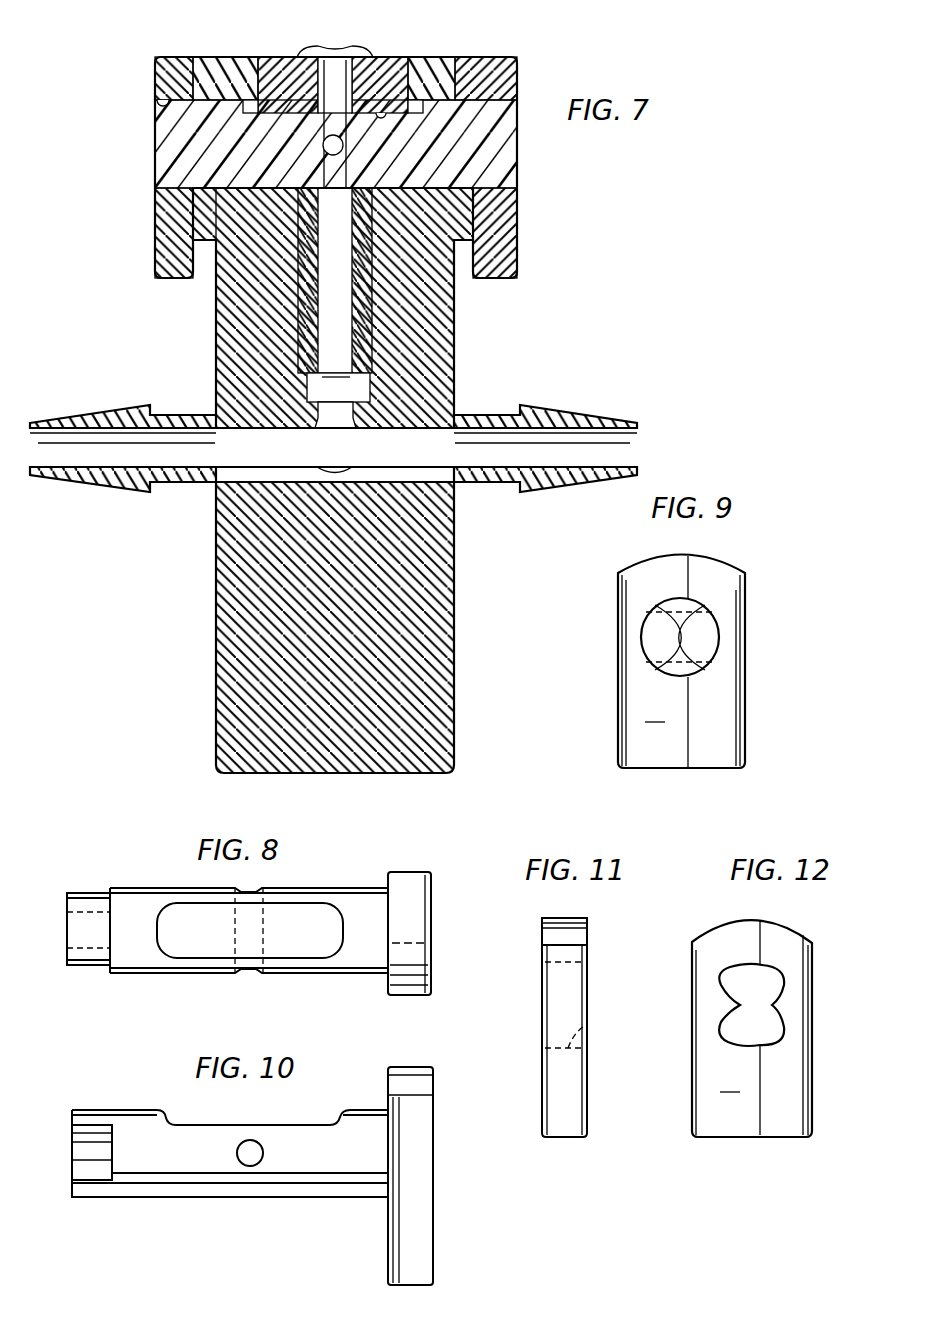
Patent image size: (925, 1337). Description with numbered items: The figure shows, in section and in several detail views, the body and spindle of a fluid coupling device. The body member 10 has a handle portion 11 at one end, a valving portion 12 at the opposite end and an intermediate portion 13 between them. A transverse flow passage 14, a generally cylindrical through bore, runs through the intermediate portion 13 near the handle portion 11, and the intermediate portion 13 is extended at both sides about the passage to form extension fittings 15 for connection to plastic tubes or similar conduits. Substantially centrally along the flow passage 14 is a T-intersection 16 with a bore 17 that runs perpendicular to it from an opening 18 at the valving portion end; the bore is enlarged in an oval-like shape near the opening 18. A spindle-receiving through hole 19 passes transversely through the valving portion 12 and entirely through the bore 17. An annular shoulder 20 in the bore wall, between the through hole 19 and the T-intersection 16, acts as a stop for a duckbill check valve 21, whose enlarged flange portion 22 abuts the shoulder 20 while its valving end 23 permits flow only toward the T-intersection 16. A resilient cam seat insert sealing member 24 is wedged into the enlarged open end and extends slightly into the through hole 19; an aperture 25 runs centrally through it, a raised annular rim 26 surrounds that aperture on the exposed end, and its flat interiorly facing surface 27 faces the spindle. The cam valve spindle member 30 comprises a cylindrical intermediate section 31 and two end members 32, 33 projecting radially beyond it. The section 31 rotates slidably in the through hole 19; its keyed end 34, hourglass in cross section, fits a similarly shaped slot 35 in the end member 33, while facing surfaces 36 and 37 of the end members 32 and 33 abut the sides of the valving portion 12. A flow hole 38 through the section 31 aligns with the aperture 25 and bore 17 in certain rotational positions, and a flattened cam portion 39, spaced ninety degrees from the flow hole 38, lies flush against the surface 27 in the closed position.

In FIG. 7, the body member 10 is at (600, 361).
In FIG. 7, the handle portion 11 is at (430, 665).
In FIG. 7, the valving portion 12 is at (470, 220).
In FIG. 7, the intermediate portion 13 is at (240, 370).
In FIG. 7, the transverse flow passage 14 is at (108, 422).
In FIG. 7, the extension fittings 15 is at (628, 422).
In FIG. 7, the T-intersection 16 is at (330, 477).
In FIG. 7, the bore 17 is at (372, 388).
In FIG. 7, the opening 18 is at (392, 72).
In FIG. 7, the spindle-receiving through hole 19 is at (450, 95).
In FIG. 7, the annular shoulder 20 is at (370, 205).
In FIG. 7, the duckbill check valve 21 is at (352, 352).
In FIG. 7, the flange portion 22 is at (300, 205).
In FIG. 7, the valving end 23 is at (318, 380).
In FIG. 7, the cam seat insert sealing member 24 is at (245, 62).
In FIG. 7, the aperture 25 is at (340, 62).
In FIG. 7, the raised annular rim 26 is at (305, 56).
In FIG. 7, the interiorly facing surface 27 is at (381, 110).
In FIG. 7, the cam valve spindle member 30 is at (582, 185).
In FIG. 9, the cam valve spindle member 30 is at (760, 566).
In FIG. 8, the cam valve spindle member 30 is at (100, 858).
In FIG. 10, the cam valve spindle member 30 is at (102, 1090).
In FIG. 11, the cam valve spindle member 30 is at (578, 1157).
In FIG. 12, the cam valve spindle member 30 is at (813, 1157).
In FIG. 7, the intermediate section 31 is at (200, 137).
In FIG. 8, the intermediate section 31 is at (142, 900).
In FIG. 10, the intermediate section 31 is at (138, 1125).
In FIG. 7, the end member 32 is at (518, 70).
In FIG. 9, the end member 32 is at (722, 750).
In FIG. 8, the end member 32 is at (418, 925).
In FIG. 10, the end member 32 is at (420, 1268).
In FIG. 7, the end member 33 is at (165, 75).
In FIG. 11, the end member 33 is at (575, 938).
In FIG. 12, the end member 33 is at (785, 938).
In FIG. 7, the keyed end 34 is at (158, 167).
In FIG. 9, the keyed end 34 is at (722, 650).
In FIG. 8, the keyed end 34 is at (82, 968).
In FIG. 10, the keyed end 34 is at (80, 1170).
In FIG. 7, the slot 35 is at (157, 103).
In FIG. 11, the slot 35 is at (588, 1005).
In FIG. 12, the slot 35 is at (782, 988).
In FIG. 7, the facing surface 36 is at (466, 258).
In FIG. 9, the facing surface 36 is at (654, 708).
In FIG. 7, the facing surface 37 is at (203, 268).
In FIG. 11, the facing surface 37 is at (588, 1102).
In FIG. 12, the facing surface 37 is at (729, 1079).
In FIG. 7, the flow hole 38 is at (344, 147).
In FIG. 10, the flow hole 38 is at (256, 1143).
In FIG. 7, the flattened cam portion 39 is at (290, 122).
In FIG. 8, the flattened cam portion 39 is at (185, 944).
In FIG. 10, the flattened cam portion 39 is at (322, 1118).